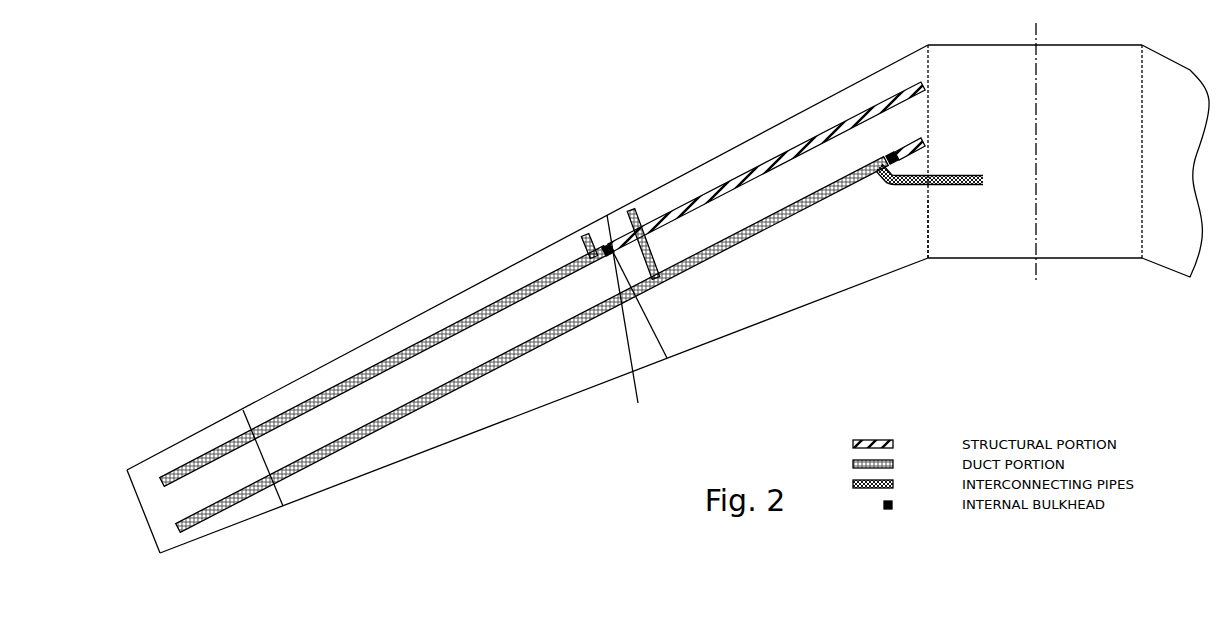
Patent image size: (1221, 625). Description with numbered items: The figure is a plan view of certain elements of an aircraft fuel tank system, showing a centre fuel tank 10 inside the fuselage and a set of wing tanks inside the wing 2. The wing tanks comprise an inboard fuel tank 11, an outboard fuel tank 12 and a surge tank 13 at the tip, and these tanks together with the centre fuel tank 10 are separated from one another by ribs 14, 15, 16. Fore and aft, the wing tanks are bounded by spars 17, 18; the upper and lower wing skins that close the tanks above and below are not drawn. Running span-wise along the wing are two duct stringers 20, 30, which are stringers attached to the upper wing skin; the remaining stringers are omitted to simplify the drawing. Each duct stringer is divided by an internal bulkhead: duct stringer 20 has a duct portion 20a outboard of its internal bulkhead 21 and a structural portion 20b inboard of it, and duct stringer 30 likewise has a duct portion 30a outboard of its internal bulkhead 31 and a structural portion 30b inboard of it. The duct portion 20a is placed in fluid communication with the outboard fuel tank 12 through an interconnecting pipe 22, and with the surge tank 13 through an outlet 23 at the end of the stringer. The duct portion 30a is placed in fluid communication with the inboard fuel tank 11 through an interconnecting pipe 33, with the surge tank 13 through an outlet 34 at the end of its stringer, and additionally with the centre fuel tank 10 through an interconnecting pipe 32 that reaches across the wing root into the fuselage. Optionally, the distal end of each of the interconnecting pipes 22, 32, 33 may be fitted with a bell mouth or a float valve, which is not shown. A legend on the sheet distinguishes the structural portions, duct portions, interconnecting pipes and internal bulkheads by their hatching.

The wing 2 is at (527, 291).
The centre fuel tank 10 is at (979, 130).
The inboard fuel tank 11 is at (766, 280).
The outboard fuel tank 12 is at (558, 374).
The surge tank 13 is at (191, 497).
The rib 14 is at (928, 208).
The rib 15 is at (650, 322).
The rib 16 is at (257, 400).
The spar 17 is at (488, 277).
The spar 18 is at (462, 440).
The duct stringer 20 is at (527, 278).
The duct portion 20a is at (422, 343).
The structural portion 20b is at (718, 183).
The internal bulkhead 21 is at (630, 329).
The interconnecting pipe 22 is at (587, 233).
The outlet 23 is at (162, 478).
The duct stringer 30 is at (579, 314).
The duct portion 30a is at (337, 452).
The structural portion 30b is at (908, 148).
The internal bulkhead 31 is at (890, 150).
The interconnecting pipe 32 is at (948, 187).
The interconnecting pipe 33 is at (625, 209).
The outlet 34 is at (178, 528).